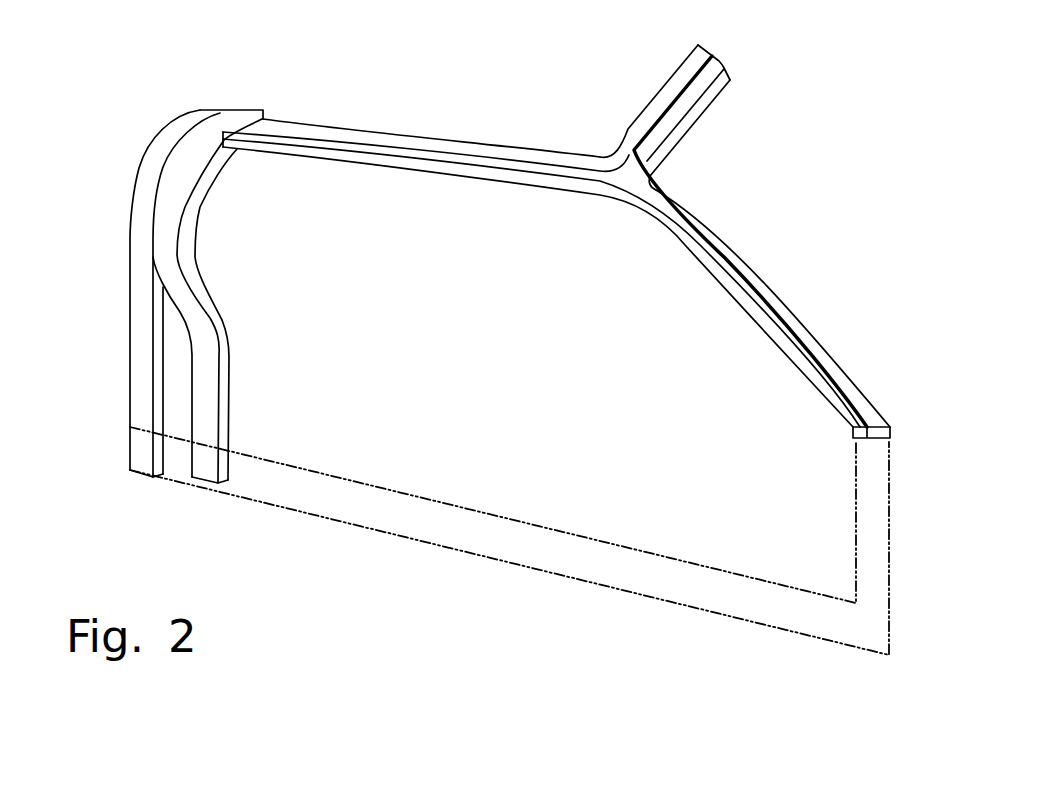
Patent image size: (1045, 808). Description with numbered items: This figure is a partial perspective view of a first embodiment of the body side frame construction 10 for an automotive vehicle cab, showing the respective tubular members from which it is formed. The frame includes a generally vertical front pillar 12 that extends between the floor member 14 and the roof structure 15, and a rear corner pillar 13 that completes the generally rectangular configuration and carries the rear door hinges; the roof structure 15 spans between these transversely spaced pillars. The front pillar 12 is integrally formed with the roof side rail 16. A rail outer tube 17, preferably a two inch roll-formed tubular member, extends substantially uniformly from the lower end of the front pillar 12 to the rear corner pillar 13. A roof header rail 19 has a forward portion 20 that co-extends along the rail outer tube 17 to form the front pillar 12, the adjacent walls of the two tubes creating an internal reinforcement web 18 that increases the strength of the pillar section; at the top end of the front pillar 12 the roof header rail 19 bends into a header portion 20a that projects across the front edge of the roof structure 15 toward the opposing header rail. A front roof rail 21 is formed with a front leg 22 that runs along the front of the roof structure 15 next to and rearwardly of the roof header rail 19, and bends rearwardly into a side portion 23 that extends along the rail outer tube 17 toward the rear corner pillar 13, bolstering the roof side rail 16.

The body side frame construction 10 is at (152, 98).
The front pillar 12 is at (793, 273).
The rear corner pillar 13 is at (135, 350).
The floor member 14 is at (531, 522).
The roof structure 15 is at (723, 104).
The roof side rail 16 is at (407, 172).
The rail outer tube 17 is at (614, 203).
The internal reinforcement web 18 is at (868, 440).
The roof header rail 19 is at (665, 202).
The forward portion 20 is at (748, 268).
The header portion 20a is at (690, 127).
The front roof rail 21 is at (638, 120).
The front leg 22 is at (668, 80).
The side portion 23 is at (423, 133).